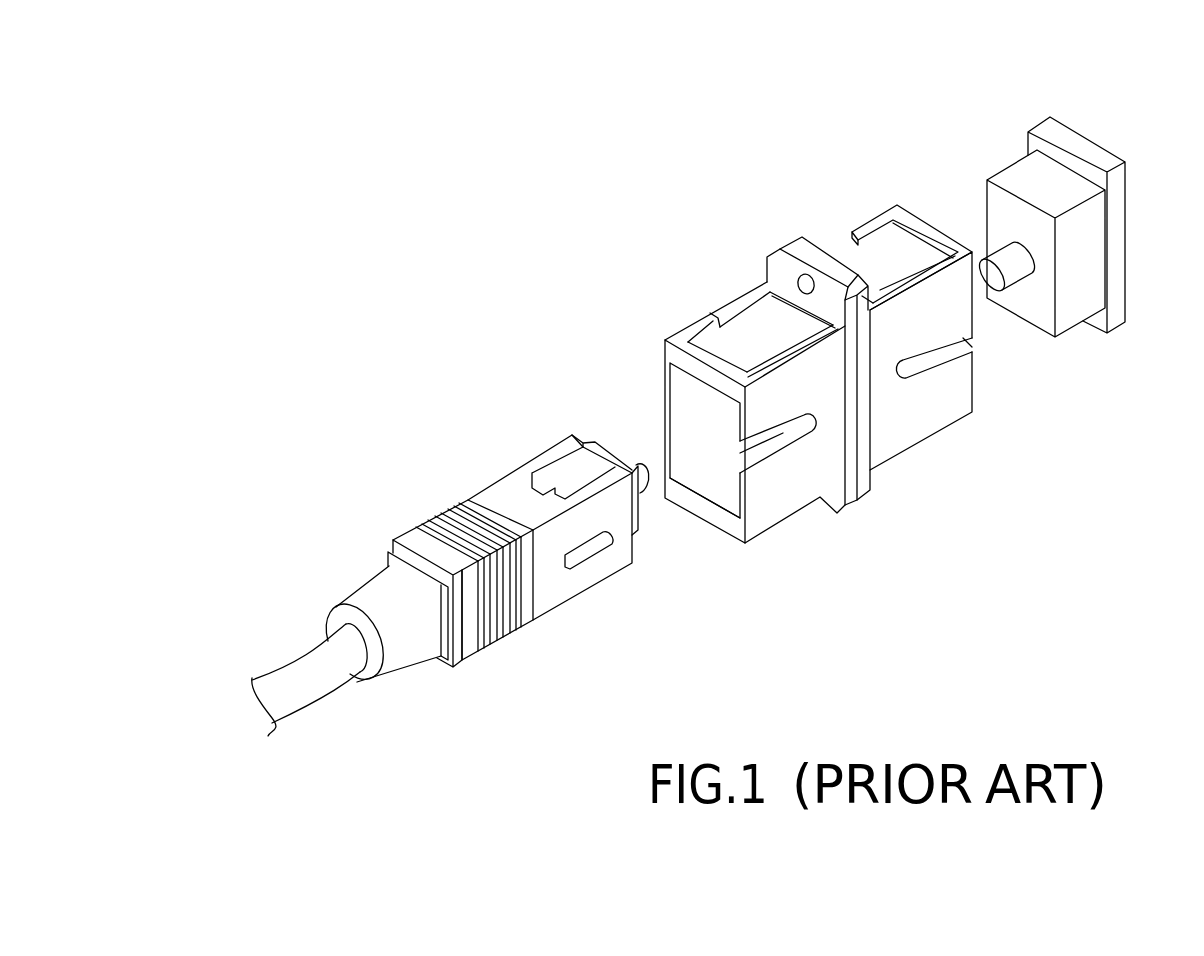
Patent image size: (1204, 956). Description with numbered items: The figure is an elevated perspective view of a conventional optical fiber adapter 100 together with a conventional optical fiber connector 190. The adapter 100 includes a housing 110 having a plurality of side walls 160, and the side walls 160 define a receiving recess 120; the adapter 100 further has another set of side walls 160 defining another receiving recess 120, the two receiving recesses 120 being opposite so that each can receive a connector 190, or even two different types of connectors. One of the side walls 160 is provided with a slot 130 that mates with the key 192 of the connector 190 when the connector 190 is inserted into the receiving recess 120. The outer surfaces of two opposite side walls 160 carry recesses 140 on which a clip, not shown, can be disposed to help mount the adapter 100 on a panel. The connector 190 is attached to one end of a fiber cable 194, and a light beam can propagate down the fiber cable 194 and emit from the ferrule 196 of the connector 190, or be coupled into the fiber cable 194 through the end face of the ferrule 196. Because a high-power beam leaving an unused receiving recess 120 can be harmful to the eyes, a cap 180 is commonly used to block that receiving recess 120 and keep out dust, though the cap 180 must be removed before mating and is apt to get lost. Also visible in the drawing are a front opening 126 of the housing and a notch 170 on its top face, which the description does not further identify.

The fiber adapter 100 is at (730, 162).
The housing 110 is at (665, 317).
The receiving recess 120 is at (722, 466).
The receiving opening 126 is at (672, 353).
The slot 130 is at (787, 438).
The recess 140 is at (762, 312).
The side wall 160 is at (937, 223).
The notch 170 is at (725, 302).
The cap 180 is at (1108, 145).
The connector 190 is at (430, 478).
The key 192 is at (588, 555).
The fiber cable 194 is at (312, 663).
The ferrule 196 is at (642, 465).